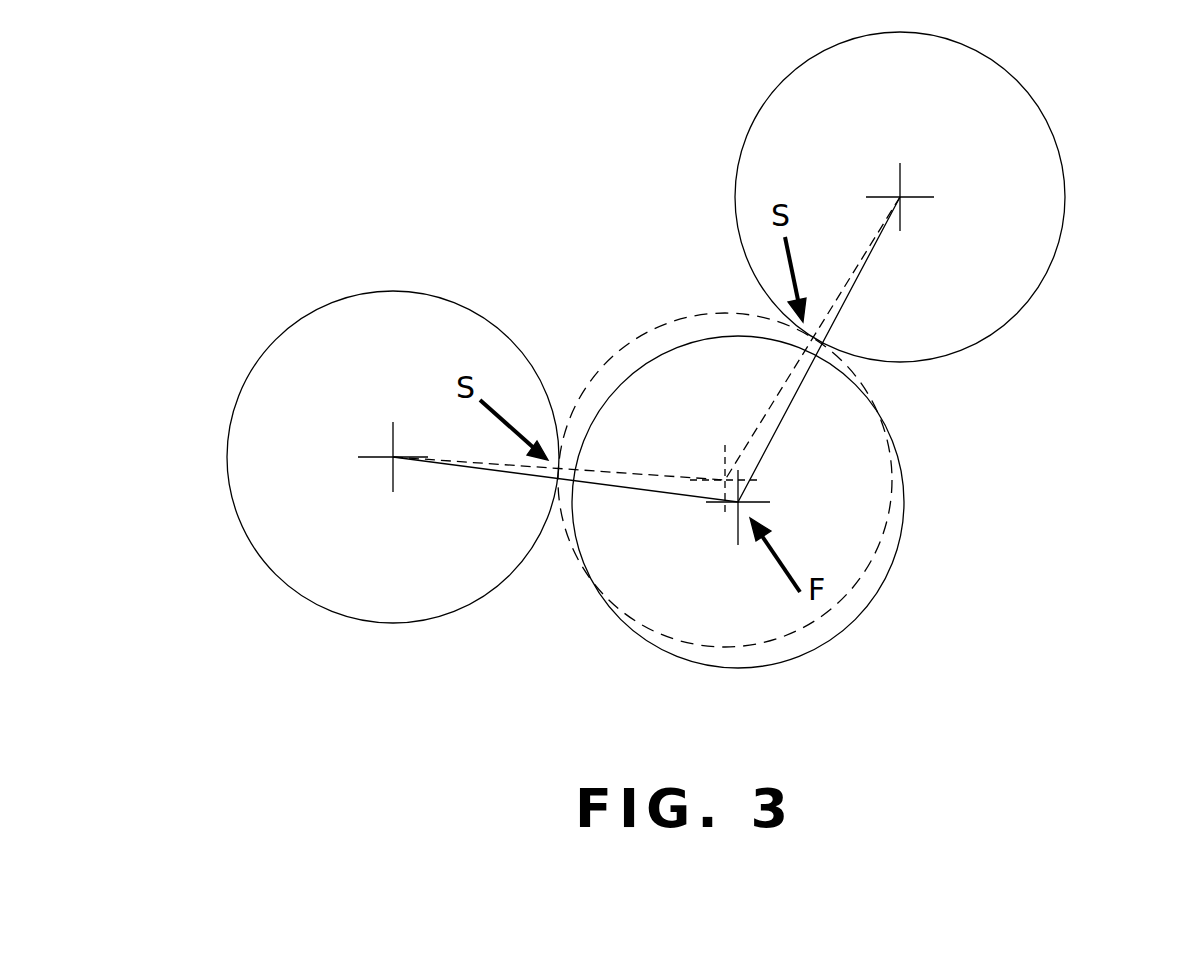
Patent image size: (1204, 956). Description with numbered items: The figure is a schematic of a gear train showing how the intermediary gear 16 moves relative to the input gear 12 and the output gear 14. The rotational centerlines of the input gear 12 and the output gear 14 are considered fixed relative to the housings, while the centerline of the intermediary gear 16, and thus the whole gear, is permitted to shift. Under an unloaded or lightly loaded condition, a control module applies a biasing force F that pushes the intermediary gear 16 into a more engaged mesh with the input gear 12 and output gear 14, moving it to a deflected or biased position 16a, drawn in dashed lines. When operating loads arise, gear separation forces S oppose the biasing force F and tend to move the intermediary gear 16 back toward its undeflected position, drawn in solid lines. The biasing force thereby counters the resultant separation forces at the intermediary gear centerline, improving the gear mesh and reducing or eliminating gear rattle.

The input gear 12 is at (297, 322).
The output gear 14 is at (1065, 167).
The intermediary gear 16 is at (882, 588).
The biased position 16a is at (648, 330).